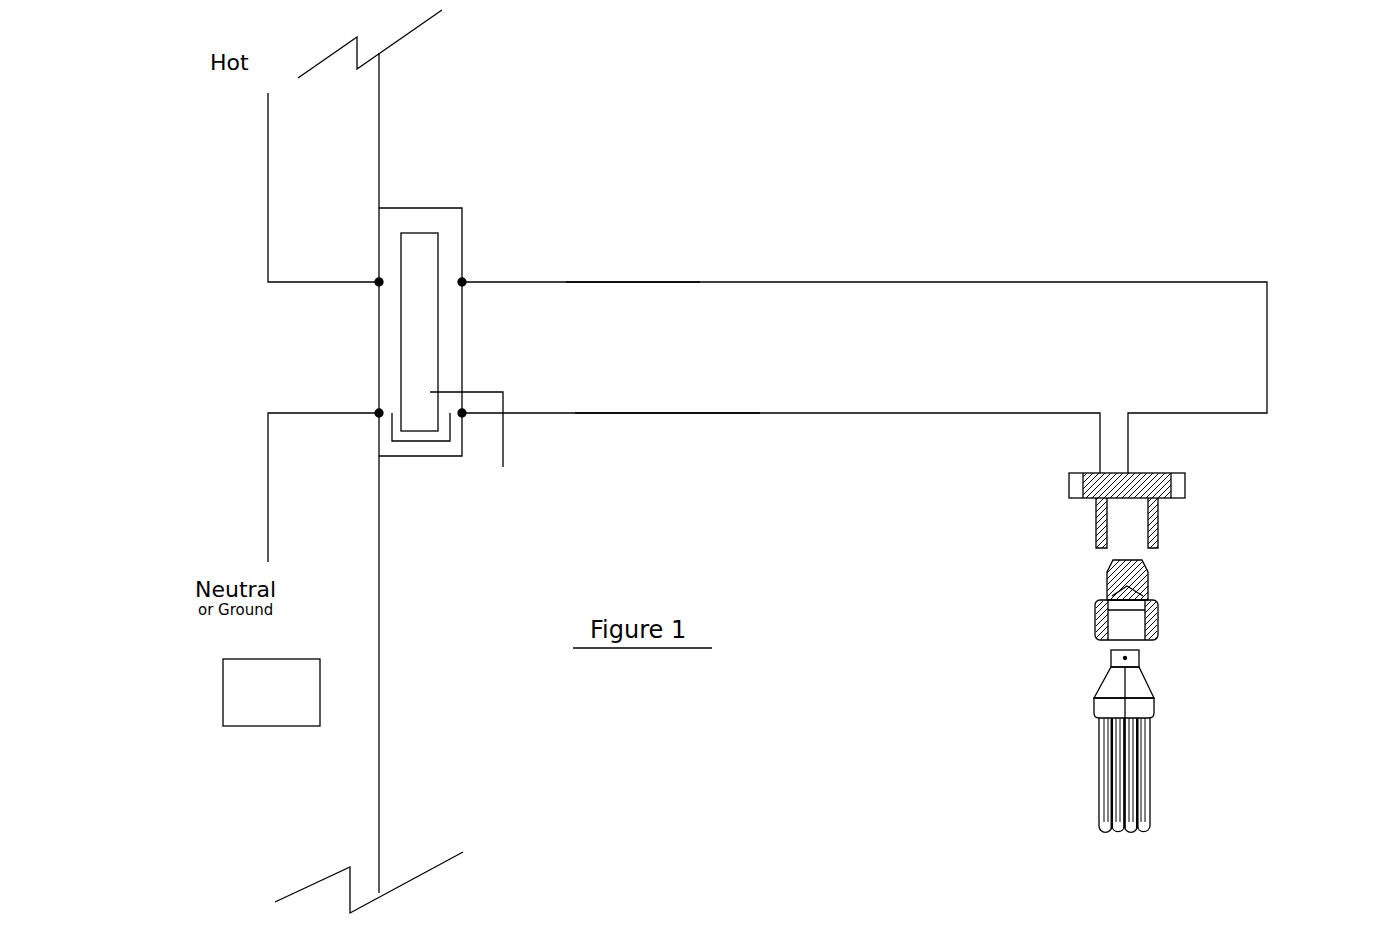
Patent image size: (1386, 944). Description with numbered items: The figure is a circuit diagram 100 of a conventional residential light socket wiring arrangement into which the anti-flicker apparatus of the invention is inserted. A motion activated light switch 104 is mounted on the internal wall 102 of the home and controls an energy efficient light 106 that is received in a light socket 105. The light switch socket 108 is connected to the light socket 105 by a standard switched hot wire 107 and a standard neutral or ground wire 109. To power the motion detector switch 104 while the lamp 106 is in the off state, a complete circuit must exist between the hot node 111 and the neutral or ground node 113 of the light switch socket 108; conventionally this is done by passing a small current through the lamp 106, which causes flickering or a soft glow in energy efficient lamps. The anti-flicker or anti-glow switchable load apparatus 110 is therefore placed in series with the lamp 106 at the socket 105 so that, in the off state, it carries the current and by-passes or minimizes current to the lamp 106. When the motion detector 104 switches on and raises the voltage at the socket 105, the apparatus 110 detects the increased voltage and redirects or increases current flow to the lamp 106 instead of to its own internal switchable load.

The circuit diagram 100 is at (1090, 158).
The internal wall 102 is at (250, 730).
The motion activated light switch 104 is at (503, 467).
The light socket 105 is at (1170, 508).
The energy efficient light 106 is at (1085, 757).
The switched hot wire 107 is at (831, 281).
The light switch socket 108 is at (425, 227).
The neutral (or ground) wire 109 is at (905, 413).
The anti-flicker or anti-glow switchable load apparatus 110 is at (1157, 589).
The hot node 111 is at (673, 240).
The neutral (or ground) node 113 is at (582, 404).